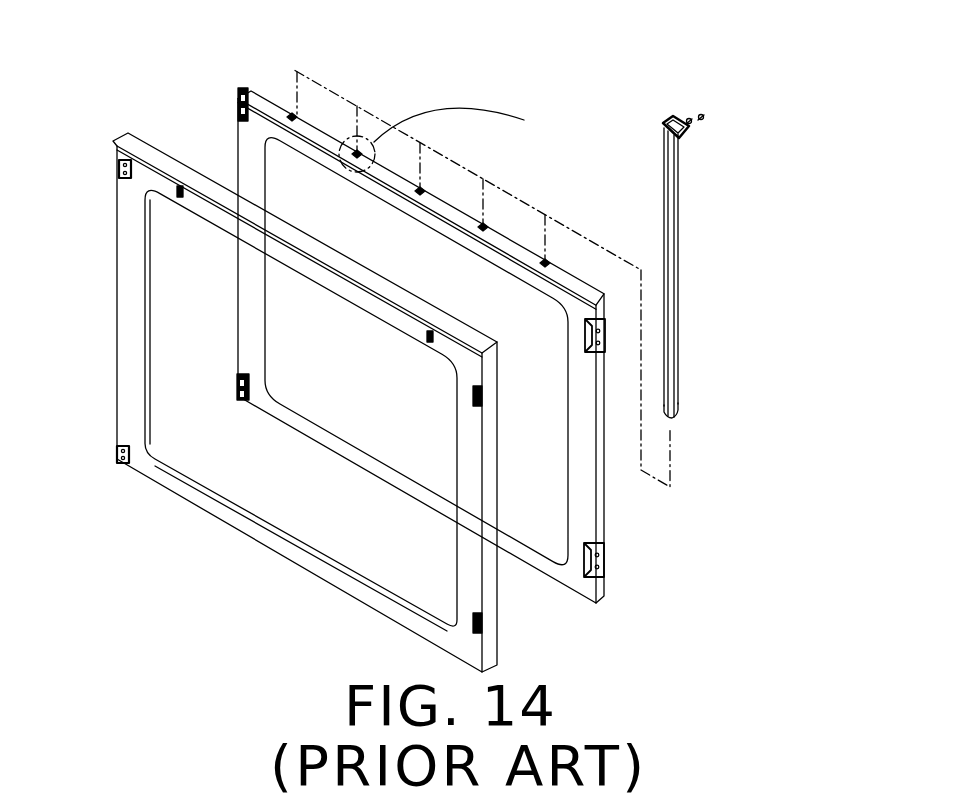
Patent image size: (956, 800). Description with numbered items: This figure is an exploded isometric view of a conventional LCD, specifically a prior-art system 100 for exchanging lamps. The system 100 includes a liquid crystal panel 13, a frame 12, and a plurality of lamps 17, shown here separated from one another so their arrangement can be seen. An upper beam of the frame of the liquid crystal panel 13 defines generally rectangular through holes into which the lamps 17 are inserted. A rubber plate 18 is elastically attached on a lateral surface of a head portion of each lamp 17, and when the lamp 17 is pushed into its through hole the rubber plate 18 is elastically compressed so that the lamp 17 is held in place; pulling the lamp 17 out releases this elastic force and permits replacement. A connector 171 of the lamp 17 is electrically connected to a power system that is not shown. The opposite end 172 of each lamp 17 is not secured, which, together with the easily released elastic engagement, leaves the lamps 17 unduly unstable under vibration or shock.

The system 100 is at (452, 47).
The frame 12 is at (103, 189).
The liquid crystal panel 13 is at (208, 132).
The lamp 17 is at (672, 226).
The rubber plate 18 is at (684, 137).
The connector 171 is at (706, 114).
The end 172 is at (673, 391).